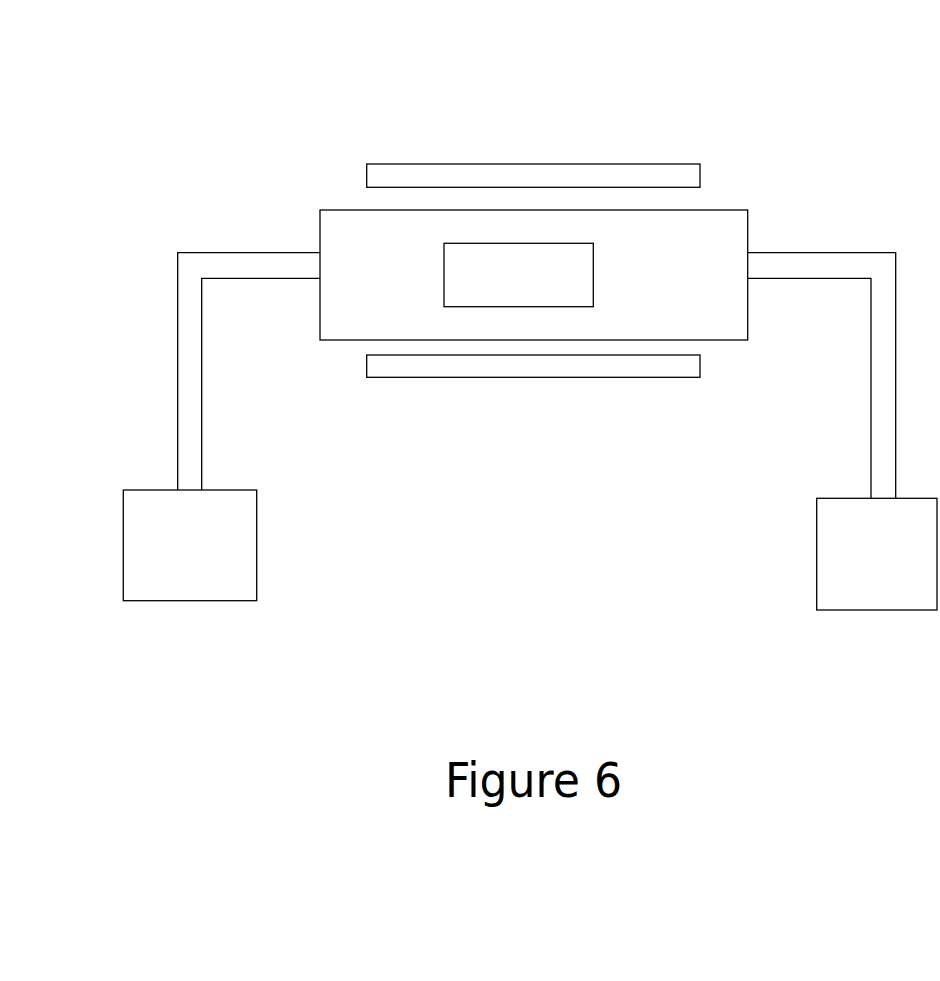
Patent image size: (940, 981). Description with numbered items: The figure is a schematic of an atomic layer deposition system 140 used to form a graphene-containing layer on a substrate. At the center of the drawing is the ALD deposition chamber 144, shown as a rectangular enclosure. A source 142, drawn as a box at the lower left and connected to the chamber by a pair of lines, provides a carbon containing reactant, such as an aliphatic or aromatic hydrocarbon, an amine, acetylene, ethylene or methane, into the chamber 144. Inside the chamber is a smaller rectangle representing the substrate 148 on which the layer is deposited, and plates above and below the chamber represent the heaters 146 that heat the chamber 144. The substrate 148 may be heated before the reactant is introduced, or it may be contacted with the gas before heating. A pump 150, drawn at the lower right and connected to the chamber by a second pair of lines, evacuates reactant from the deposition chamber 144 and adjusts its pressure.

The ALD system 140 is at (827, 127).
The source 142 is at (257, 550).
The ALD deposition chamber 144 is at (328, 207).
The heaters 146 is at (548, 253).
The substrate 148 is at (483, 160).
The pump 150 is at (817, 565).